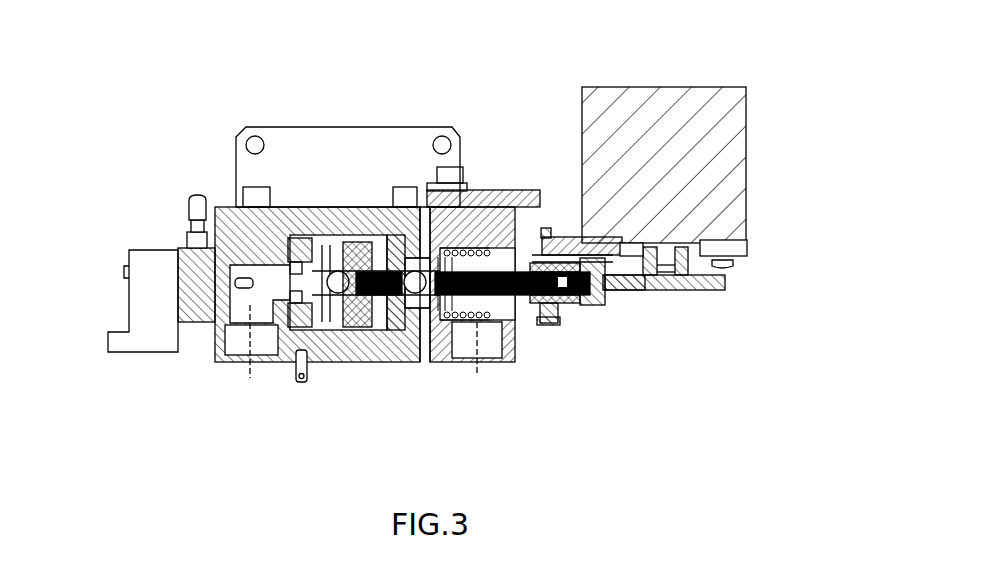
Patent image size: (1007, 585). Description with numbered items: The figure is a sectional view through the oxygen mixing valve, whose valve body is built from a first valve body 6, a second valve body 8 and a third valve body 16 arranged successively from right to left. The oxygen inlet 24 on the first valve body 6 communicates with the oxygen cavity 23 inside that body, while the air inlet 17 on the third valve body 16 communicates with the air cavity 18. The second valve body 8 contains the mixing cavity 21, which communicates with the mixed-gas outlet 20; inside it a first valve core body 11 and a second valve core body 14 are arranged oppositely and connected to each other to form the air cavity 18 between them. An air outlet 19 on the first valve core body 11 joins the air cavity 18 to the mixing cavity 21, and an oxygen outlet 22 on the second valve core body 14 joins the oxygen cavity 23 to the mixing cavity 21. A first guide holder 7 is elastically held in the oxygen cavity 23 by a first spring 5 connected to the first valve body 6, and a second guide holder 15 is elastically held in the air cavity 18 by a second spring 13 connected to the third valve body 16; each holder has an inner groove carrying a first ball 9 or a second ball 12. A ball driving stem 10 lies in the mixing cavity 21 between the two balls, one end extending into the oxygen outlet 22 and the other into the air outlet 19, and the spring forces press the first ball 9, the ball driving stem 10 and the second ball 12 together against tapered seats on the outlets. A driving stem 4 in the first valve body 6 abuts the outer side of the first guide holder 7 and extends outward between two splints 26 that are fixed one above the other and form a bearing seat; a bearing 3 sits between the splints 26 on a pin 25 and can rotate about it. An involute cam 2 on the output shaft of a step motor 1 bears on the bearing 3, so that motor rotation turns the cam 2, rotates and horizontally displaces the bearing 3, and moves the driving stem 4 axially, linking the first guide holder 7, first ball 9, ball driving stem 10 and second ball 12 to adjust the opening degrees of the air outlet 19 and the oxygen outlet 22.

The step motor 1 is at (748, 113).
The involute cam 2 is at (722, 290).
The bearing 3 is at (622, 305).
The driving stem 4 is at (552, 226).
The first spring 5 is at (496, 190).
The first valve body 6 is at (472, 202).
The first guide holder 7 is at (441, 213).
The second valve body 8 is at (427, 210).
The first ball 9 is at (423, 300).
The ball driving stem 10 is at (392, 280).
The first valve core body 11 is at (355, 252).
The second ball 12 is at (328, 246).
The second spring 13 is at (309, 242).
The second valve core body 14 is at (300, 236).
The second guide holder 15 is at (262, 220).
The third valve body 16 is at (215, 207).
The air inlet 17 is at (238, 343).
The air cavity 18 is at (296, 342).
The air outlet 19 is at (306, 375).
The mixed-gas outlet 20 is at (368, 345).
The mixing cavity 21 is at (378, 300).
The oxygen outlet 22 is at (418, 340).
The oxygen cavity 23 is at (455, 340).
The oxygen inlet 24 is at (485, 345).
The pin 25 is at (593, 305).
The splints 26 is at (665, 292).